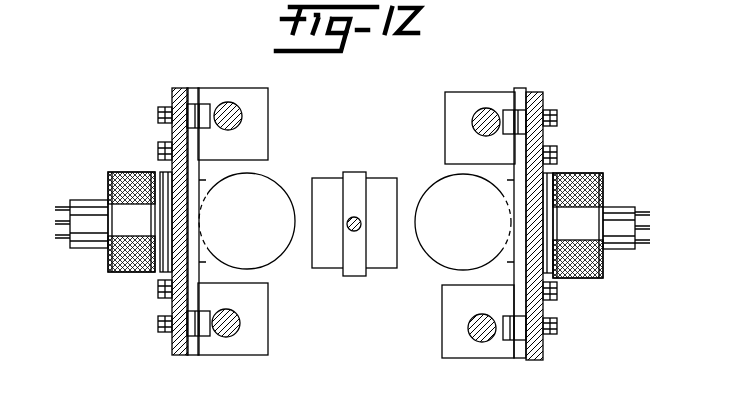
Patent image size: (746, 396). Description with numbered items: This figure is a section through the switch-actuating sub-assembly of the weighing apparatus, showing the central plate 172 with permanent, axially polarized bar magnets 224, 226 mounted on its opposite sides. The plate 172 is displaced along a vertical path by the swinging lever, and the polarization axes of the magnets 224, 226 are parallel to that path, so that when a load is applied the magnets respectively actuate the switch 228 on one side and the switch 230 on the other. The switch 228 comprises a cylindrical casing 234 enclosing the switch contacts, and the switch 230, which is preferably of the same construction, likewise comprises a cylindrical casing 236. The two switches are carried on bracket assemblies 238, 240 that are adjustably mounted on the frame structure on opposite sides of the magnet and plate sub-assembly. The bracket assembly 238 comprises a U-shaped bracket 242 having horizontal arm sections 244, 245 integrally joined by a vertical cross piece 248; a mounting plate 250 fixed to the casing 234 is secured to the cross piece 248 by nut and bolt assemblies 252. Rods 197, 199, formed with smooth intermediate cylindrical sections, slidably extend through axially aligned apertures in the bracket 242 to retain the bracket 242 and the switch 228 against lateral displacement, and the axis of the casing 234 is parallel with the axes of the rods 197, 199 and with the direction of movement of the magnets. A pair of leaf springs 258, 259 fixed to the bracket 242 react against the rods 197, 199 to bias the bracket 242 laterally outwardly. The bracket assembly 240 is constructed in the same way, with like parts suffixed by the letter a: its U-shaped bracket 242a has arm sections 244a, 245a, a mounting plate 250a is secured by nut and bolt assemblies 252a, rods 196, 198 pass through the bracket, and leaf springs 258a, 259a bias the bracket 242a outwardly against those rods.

The plate 172 is at (353, 221).
The rod 196 is at (480, 314).
The rod 197 is at (228, 311).
The rod 198 is at (483, 108).
The rod 199 is at (229, 102).
The bar magnet 224 is at (330, 178).
The bar magnet 226 is at (382, 286).
The switch 228 is at (258, 211).
The switch 230 is at (445, 213).
The cylindrical casing 234 is at (268, 262).
The cylindrical casing 236 is at (446, 265).
The bracket assembly 238 is at (119, 225).
The bracket assembly 240 is at (588, 226).
The U-shaped bracket 242 is at (170, 336).
The U-shaped bracket 242a is at (547, 351).
The arm section 244 is at (268, 327).
The arm section 244a is at (443, 326).
The arm section 245 is at (268, 102).
The arm section 245a is at (447, 104).
The cross piece 248 is at (180, 348).
The mounting plate 250 is at (199, 155).
The mounting plate 250a is at (514, 152).
The nut and bolt assembly 252 is at (160, 153).
The nut and bolt assembly 252a is at (557, 158).
The leaf spring 258 is at (200, 336).
The leaf spring 258a is at (512, 340).
The leaf spring 259 is at (199, 104).
The leaf spring 259a is at (505, 110).